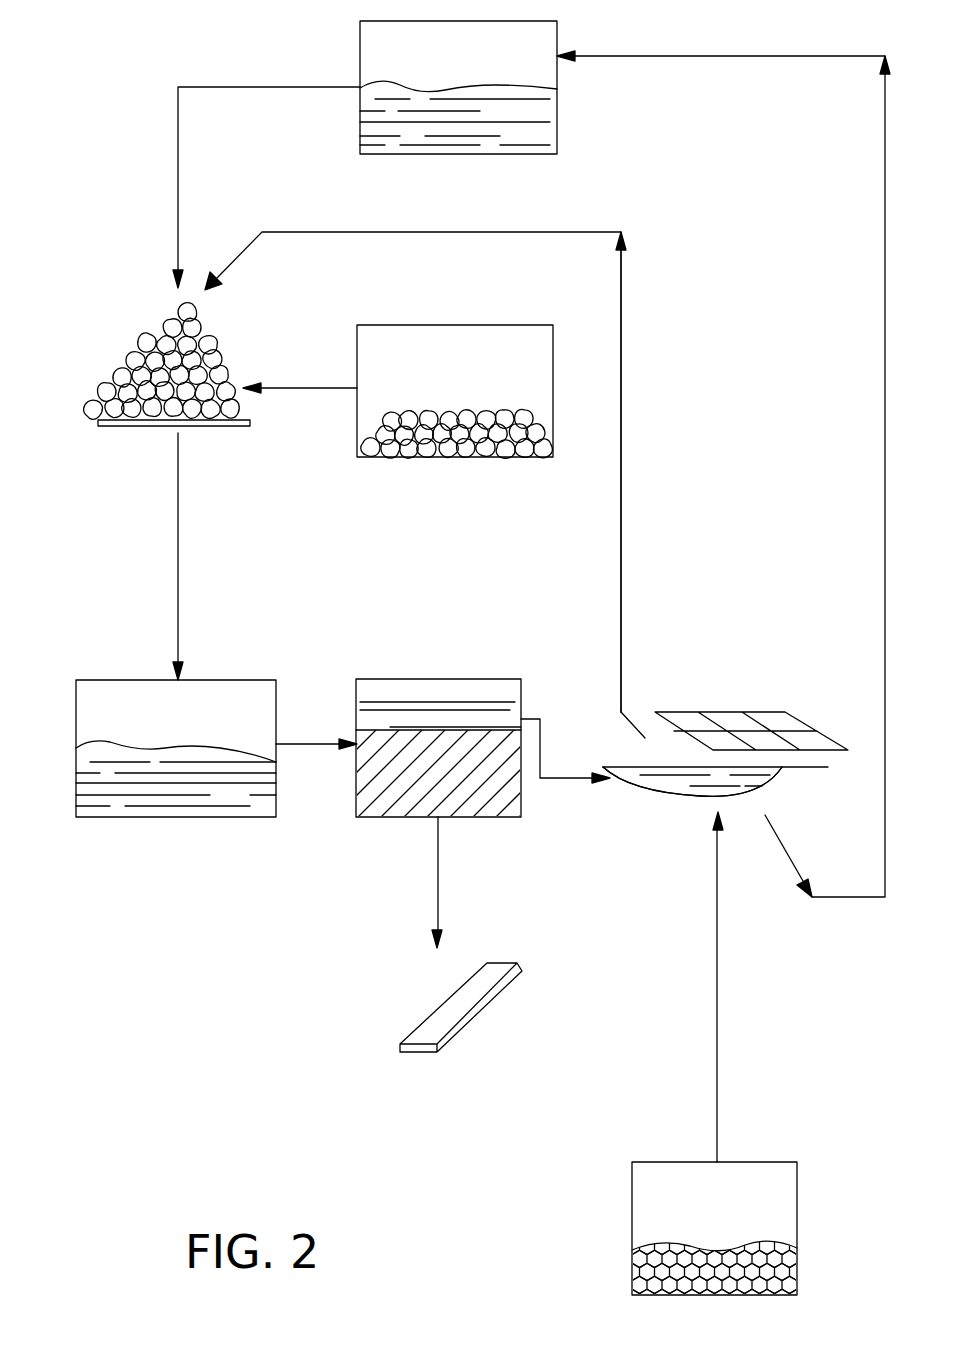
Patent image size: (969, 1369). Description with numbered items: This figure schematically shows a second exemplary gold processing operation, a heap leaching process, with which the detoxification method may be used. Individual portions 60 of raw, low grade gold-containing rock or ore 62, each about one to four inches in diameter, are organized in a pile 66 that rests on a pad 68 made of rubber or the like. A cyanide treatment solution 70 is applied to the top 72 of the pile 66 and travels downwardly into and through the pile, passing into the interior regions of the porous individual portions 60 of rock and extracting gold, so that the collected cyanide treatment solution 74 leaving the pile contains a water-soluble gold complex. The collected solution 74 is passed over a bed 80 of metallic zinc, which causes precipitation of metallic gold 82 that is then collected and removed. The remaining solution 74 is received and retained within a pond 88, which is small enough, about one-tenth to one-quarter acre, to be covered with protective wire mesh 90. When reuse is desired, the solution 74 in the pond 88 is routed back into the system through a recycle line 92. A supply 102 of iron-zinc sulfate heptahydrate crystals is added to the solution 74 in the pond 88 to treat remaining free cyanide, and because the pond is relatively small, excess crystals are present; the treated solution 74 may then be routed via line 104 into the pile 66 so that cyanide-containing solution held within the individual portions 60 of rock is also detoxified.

The individual portions of rock 60 is at (88, 420).
The gold-containing rock (ore) 62 is at (442, 334).
The pile 66 is at (306, 398).
The pad 68 is at (250, 424).
The cyanide treatment solution 70 is at (550, 140).
The top of the pile 72 is at (165, 310).
The collected cyanide treatment solution 74 is at (238, 817).
The bed of metallic zinc 80 is at (494, 818).
The metallic gold 82 is at (418, 1056).
The pond 88 is at (658, 788).
The protective wire mesh 90 is at (782, 712).
The recycle line 92 is at (885, 222).
The supply of (Fe·Zn)SO4·7H2O crystals 102 is at (775, 1296).
The line 104 is at (621, 366).